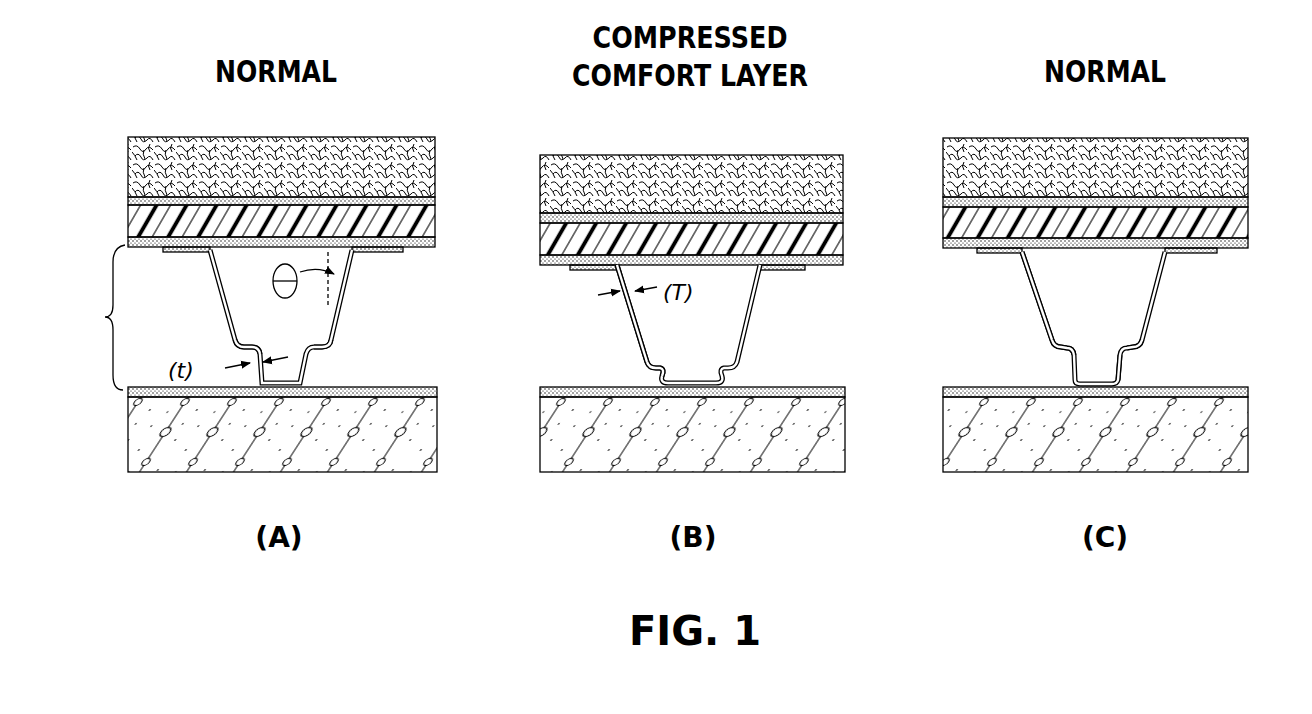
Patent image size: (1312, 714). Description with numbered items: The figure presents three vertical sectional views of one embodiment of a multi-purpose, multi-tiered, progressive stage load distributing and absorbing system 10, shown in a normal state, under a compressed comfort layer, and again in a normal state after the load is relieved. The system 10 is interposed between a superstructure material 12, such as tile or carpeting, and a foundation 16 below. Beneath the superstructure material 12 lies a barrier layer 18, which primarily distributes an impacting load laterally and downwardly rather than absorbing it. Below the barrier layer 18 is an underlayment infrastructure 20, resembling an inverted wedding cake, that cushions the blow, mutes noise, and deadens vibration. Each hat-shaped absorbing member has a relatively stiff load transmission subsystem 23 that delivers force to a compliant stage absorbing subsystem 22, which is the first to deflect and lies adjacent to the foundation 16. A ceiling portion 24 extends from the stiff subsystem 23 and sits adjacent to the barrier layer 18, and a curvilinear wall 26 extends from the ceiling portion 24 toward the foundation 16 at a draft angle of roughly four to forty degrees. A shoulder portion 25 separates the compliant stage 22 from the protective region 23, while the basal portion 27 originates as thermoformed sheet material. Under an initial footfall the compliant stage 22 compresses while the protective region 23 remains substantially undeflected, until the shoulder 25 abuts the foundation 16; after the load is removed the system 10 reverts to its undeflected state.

The progressive stage load distributing and absorbing system 10 is at (375, 312).
The superstructure material 12 is at (435, 167).
The foundation 16 is at (437, 437).
The barrier layer 18 is at (435, 223).
The underlayment infrastructure 20 is at (101, 317).
The compliant stage absorbing subsystem 22 is at (312, 374).
The stiff load transmission subsystem 23 is at (622, 310).
The ceiling portion 24 is at (366, 250).
The shoulder portion 25 is at (325, 357).
The curvilinear wall 26 is at (742, 317).
The basal portion 27 is at (1095, 378).